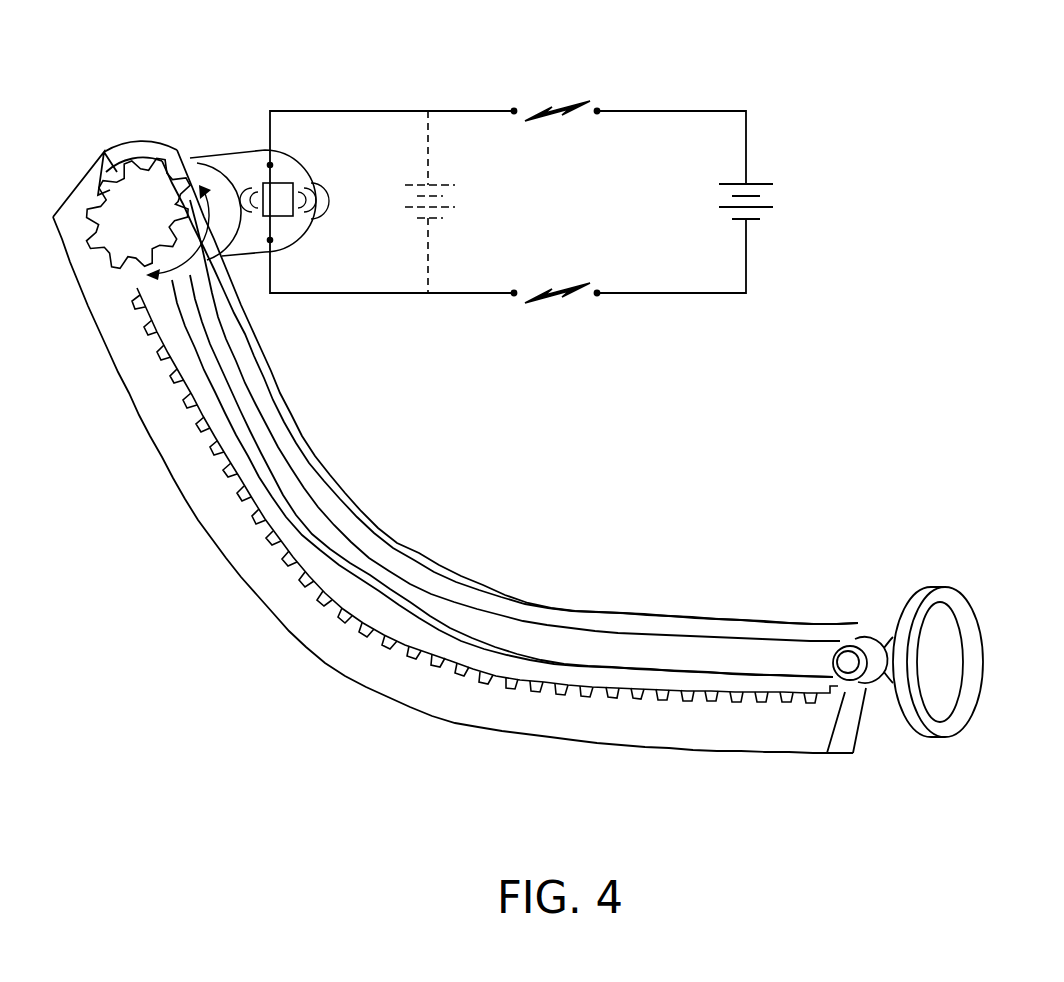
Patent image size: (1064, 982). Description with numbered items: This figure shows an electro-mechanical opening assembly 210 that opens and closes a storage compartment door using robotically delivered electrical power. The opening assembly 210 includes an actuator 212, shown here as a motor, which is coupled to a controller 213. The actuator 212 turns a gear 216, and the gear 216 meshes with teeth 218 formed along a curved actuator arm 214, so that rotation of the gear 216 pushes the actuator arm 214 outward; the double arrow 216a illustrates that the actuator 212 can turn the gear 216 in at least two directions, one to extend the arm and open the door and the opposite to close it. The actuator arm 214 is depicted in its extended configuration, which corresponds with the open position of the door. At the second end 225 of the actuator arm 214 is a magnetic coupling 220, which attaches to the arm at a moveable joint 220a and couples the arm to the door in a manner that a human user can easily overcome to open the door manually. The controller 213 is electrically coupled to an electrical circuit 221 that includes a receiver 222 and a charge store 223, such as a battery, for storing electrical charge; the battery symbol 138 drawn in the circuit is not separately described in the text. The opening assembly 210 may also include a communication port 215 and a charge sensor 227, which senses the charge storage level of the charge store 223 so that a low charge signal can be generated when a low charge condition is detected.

The opening assembly 210 is at (947, 117).
The actuator 212 is at (197, 185).
The controller 213 is at (248, 160).
The actuator arm 214 is at (229, 543).
The communication port 215 is at (293, 187).
The gear 216 is at (132, 175).
The double arrow 216a is at (188, 260).
The teeth 218 is at (143, 295).
The magnetic coupling 220 is at (950, 663).
The moveable joint 220a is at (867, 687).
The electrical circuit 221 is at (333, 82).
The receiver 222 is at (514, 111).
The charge store 223 is at (428, 257).
The second end 225 is at (922, 553).
The charge sensor 227 is at (292, 213).
The battery 138 is at (766, 207).